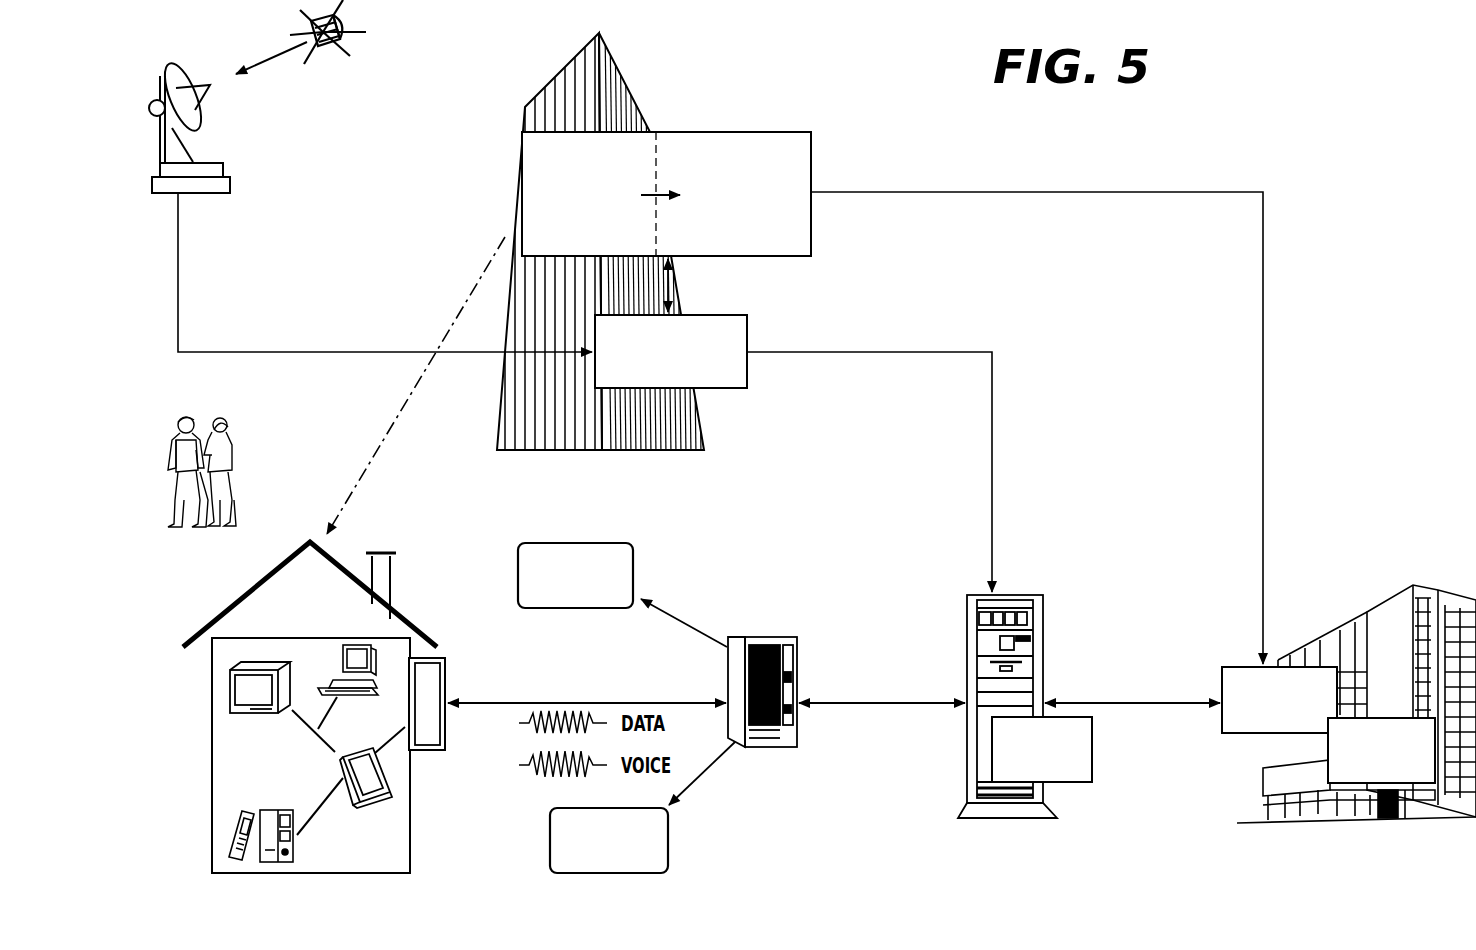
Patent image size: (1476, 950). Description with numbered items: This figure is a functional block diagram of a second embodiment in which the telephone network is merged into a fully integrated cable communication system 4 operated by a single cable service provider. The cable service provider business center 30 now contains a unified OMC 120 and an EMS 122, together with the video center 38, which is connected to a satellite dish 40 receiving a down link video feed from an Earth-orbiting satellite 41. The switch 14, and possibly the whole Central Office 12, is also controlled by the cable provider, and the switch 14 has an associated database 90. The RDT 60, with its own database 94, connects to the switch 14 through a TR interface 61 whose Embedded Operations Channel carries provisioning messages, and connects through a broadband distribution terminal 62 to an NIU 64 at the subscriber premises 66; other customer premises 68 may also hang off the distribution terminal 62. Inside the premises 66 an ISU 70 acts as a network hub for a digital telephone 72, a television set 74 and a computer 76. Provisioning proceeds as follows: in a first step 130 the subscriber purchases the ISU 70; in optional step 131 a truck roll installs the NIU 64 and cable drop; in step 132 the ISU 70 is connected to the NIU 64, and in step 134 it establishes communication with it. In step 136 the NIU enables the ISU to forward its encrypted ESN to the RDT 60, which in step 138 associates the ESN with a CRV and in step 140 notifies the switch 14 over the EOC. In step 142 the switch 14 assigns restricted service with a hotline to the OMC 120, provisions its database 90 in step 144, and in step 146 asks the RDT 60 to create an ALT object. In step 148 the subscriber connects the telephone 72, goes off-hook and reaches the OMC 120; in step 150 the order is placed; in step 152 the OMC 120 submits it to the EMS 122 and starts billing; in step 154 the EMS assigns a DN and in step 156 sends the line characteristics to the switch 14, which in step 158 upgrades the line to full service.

The cable communication system 4 is at (407, 134).
The Central Office 12 is at (1402, 592).
The switch 14 is at (1274, 721).
The business center 30 is at (571, 60).
The video center 38 is at (727, 316).
The satellite dish 40 is at (226, 170).
The satellite 41 is at (330, 45).
The Remote Digital Terminal 60 is at (1009, 688).
The TR-303 interface 61 is at (1132, 703).
The broadband distribution terminal 62 is at (778, 637).
The NIU 64 is at (447, 673).
The subscriber premises 66 is at (415, 622).
The other customer premises 68 is at (633, 555).
The ISU 70 is at (389, 782).
The digital telephone 72 is at (254, 821).
The television set 74 is at (230, 686).
The computer 76 is at (343, 665).
The database 90 is at (1381, 729).
The database 94 is at (1068, 783).
The unified OMC 120 is at (657, 177).
The EMS 122 is at (683, 177).
The first step 130 is at (234, 472).
The optional step 131 is at (416, 385).
The step 132 is at (417, 803).
The step 134 is at (480, 745).
The step 136 is at (706, 687).
The step 138 is at (1013, 595).
The step 140 is at (1132, 703).
The step 142 is at (1279, 700).
The step 144 is at (1380, 718).
The step 146 is at (1166, 708).
The step 148 is at (205, 851).
The step 150 is at (657, 177).
The step 152 is at (657, 177).
The step 154 is at (787, 133).
The step 156 is at (1296, 400).
The step 158 is at (1252, 738).